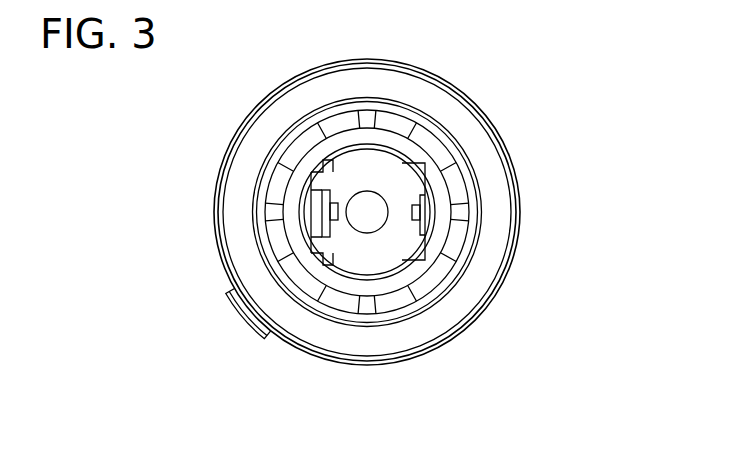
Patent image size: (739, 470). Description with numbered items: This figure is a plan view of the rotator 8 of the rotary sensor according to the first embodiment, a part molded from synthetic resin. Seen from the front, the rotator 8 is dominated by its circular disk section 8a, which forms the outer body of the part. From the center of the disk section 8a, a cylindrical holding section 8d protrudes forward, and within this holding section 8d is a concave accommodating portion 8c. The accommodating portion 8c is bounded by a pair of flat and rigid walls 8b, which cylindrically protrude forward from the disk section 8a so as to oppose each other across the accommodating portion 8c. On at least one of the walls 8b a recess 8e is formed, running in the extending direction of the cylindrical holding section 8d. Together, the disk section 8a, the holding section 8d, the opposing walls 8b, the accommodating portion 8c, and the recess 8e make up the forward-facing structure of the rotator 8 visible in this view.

The rotator 8 is at (466, 83).
The disk section 8a is at (490, 299).
The walls 8b is at (348, 190).
The accommodating portion 8c is at (352, 255).
The holding section 8d is at (417, 287).
The recess 8e is at (425, 183).